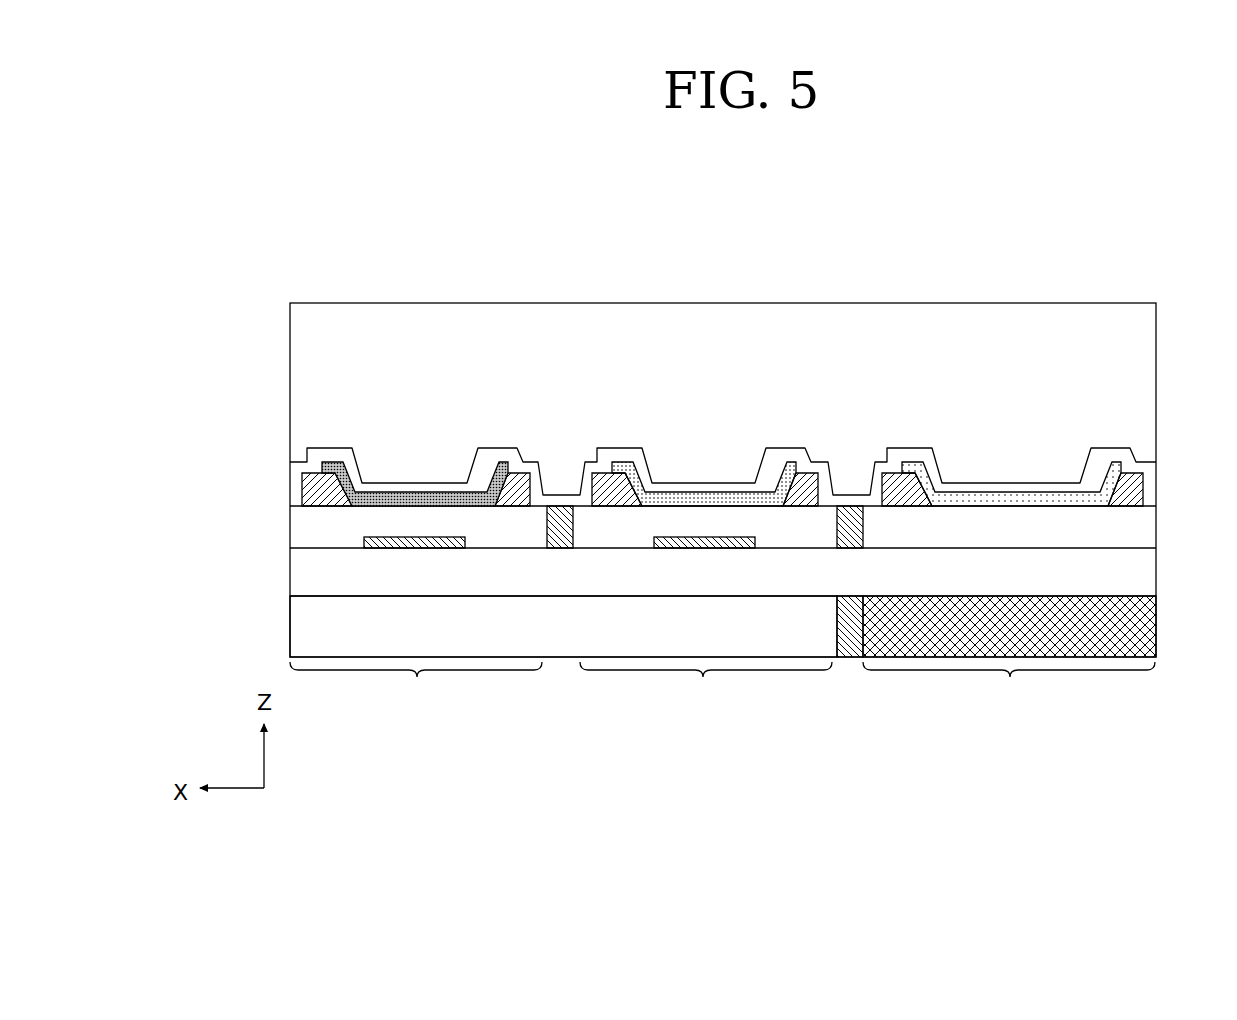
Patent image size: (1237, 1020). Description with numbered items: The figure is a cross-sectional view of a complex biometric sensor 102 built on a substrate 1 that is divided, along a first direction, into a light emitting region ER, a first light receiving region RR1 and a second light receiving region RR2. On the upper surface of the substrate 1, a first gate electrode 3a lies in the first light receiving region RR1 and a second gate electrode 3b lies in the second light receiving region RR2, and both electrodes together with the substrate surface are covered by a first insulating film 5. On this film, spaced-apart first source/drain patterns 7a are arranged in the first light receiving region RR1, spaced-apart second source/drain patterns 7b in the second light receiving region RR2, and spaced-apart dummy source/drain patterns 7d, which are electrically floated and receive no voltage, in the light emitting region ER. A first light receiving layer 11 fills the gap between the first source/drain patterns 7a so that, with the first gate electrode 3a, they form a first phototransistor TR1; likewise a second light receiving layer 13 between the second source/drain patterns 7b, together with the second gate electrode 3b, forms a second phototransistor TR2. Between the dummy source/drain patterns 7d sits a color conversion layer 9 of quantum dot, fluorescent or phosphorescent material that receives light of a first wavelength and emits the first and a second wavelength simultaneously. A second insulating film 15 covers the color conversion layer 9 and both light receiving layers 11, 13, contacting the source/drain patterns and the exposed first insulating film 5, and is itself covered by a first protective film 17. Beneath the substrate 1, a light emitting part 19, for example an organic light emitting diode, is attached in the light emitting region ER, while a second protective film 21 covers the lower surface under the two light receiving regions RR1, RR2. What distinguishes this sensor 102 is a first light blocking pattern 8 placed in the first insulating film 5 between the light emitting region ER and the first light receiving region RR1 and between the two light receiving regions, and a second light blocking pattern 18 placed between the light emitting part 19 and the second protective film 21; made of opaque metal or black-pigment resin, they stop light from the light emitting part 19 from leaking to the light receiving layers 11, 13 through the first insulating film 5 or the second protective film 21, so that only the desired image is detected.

The complex biometric sensor 102 is at (1143, 250).
The substrate 1 is at (1147, 572).
The first gate electrode 3a is at (740, 543).
The second gate electrode 3b is at (443, 543).
The first insulating film 5 is at (1147, 528).
The first source/drain patterns 7a is at (607, 480).
The second source/drain patterns 7b is at (315, 480).
The dummy source/drain patterns 7d is at (895, 480).
The first light blocking pattern 8 is at (558, 520).
The color conversion layer 9 is at (1011, 502).
The first light receiving layer 11 is at (705, 502).
The second light receiving layer 13 is at (415, 502).
The second insulating film 15 is at (1147, 467).
The first protective film 17 is at (1147, 377).
The second light blocking pattern 18 is at (848, 647).
The light emitting part 19 is at (1147, 633).
The second protective film 21 is at (297, 624).
The first phototransistor TR1 is at (685, 560).
The second phototransistor TR2 is at (388, 560).
The first light receiving region RR1 is at (706, 686).
The second light receiving region RR2 is at (416, 686).
The light emitting region ER is at (1009, 687).